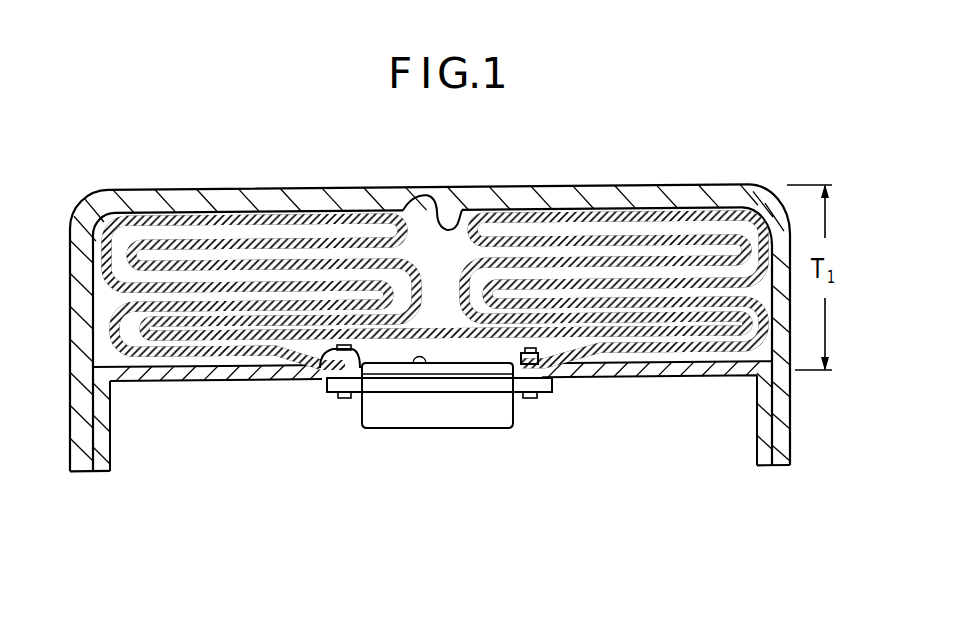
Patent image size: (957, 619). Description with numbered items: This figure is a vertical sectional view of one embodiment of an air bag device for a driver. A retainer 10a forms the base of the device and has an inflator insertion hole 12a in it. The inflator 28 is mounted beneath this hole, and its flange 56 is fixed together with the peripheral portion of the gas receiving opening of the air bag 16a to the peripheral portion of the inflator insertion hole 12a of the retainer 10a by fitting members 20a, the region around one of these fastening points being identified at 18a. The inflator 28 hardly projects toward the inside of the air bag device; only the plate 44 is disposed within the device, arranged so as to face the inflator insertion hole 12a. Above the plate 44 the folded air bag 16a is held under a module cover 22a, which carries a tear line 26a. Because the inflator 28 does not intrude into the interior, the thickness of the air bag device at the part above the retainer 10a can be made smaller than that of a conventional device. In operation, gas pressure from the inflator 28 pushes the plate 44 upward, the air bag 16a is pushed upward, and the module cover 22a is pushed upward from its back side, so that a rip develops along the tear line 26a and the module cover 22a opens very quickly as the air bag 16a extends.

The module cover 22a is at (283, 189).
The tear line 26a is at (458, 210).
The air bag 16a is at (598, 213).
The retainer 10a is at (652, 375).
The terminal 18a is at (313, 373).
The inflator insertion hole 12a is at (550, 381).
The fitting members 20a is at (342, 399).
The plate 44 is at (408, 368).
The inflator 28 is at (463, 433).
The flange 56 is at (327, 385).